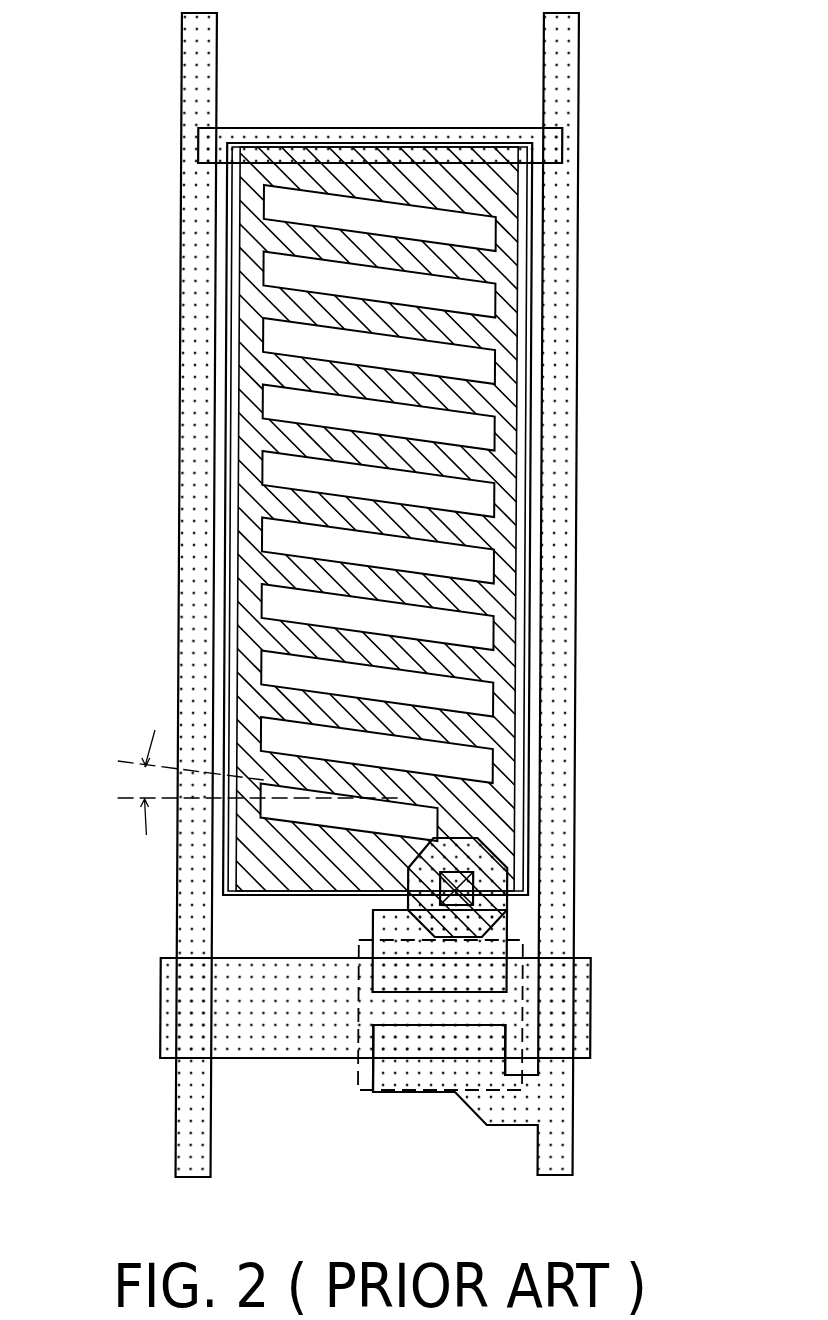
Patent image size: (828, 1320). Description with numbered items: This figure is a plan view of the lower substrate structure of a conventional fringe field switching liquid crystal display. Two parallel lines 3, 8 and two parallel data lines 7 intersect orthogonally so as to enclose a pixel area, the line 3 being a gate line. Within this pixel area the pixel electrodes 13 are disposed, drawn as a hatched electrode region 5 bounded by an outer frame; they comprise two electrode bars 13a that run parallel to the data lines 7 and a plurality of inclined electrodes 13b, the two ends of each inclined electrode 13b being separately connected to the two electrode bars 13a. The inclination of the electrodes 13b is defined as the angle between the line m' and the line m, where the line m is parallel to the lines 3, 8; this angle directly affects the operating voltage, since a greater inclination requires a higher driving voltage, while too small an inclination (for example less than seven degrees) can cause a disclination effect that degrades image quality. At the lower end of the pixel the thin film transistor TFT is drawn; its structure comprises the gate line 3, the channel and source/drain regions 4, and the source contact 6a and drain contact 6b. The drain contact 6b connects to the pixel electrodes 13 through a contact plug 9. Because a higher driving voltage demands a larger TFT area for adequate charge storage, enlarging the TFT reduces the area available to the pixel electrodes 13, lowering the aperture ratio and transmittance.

The gate line 3 is at (173, 1008).
The channel and source/drain regions 4 is at (497, 1008).
The pixel electrode 5 is at (530, 442).
The source contact 6a is at (497, 1040).
The drain contact 6b is at (497, 973).
The data line 7 is at (193, 313).
The line parallel to the gate line 8 is at (554, 143).
The contact plug 9 is at (483, 887).
The pixel electrodes 13 is at (248, 646).
The electrode bar 13a is at (250, 578).
The inclined electrode 13b is at (292, 437).
The line m is at (241, 795).
The line m' is at (173, 758).
The thin film transistor TFT is at (479, 1040).